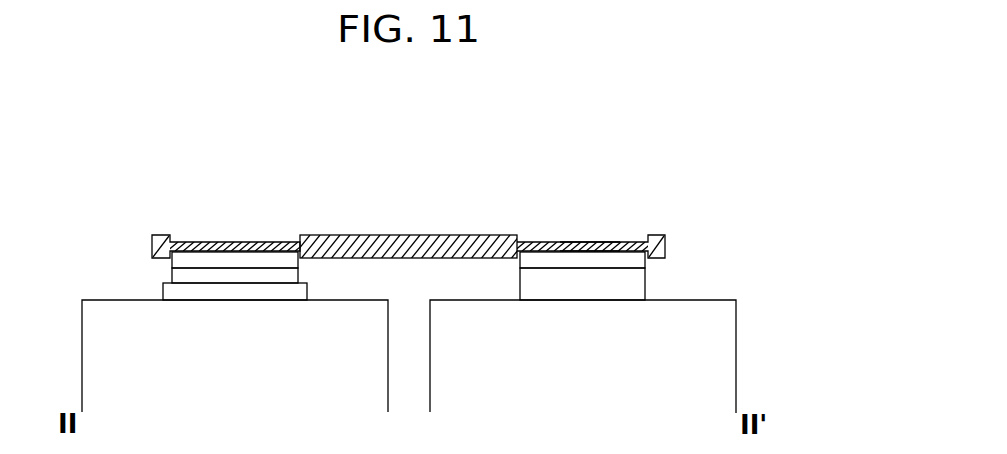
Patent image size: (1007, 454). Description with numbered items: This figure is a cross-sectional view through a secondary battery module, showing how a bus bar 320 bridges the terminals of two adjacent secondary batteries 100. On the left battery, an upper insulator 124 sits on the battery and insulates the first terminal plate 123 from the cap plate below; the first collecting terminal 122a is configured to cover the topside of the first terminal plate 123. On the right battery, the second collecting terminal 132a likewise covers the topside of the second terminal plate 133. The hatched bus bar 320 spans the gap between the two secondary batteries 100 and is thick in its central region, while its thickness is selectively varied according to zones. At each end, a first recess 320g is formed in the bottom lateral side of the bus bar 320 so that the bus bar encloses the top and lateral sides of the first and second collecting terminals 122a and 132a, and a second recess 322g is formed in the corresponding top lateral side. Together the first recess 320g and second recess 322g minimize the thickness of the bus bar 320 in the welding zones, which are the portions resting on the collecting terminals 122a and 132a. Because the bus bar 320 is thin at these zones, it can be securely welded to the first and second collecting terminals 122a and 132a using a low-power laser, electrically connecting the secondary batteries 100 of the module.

The secondary battery 100 is at (728, 357).
The bus bar 320 is at (410, 234).
The second recess 322g is at (585, 243).
The first recess 320g is at (588, 250).
The first collecting terminal 122a is at (262, 255).
The first terminal plate 123 is at (236, 272).
The upper insulator 124 is at (188, 293).
The second collecting terminal 132a is at (553, 262).
The second terminal plate 133 is at (607, 287).